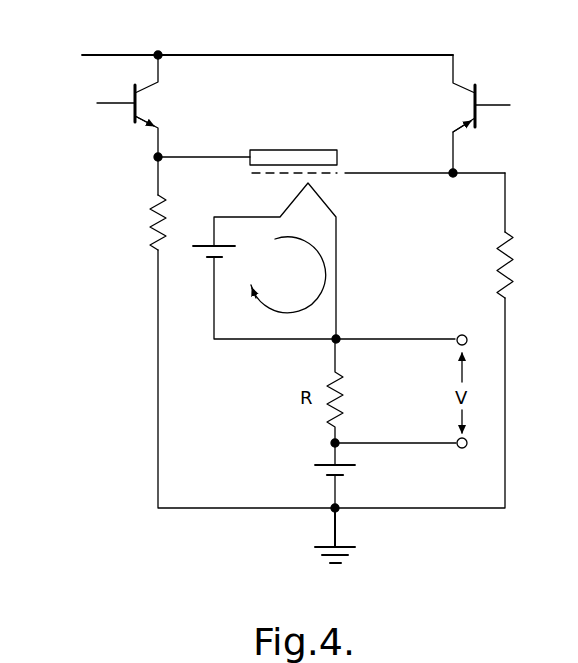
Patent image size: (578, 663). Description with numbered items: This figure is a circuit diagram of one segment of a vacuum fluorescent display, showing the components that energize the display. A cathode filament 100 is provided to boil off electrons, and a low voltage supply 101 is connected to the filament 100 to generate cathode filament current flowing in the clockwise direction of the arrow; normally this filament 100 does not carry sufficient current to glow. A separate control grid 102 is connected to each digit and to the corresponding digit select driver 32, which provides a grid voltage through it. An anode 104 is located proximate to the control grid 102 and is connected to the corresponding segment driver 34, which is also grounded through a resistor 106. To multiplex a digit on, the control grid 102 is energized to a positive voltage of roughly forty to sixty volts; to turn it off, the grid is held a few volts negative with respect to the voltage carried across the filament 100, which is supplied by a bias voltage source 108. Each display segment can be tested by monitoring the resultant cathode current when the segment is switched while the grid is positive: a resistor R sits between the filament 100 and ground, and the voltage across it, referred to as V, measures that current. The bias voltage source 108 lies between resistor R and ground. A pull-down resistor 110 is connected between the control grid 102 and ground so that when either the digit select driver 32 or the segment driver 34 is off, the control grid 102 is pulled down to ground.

The digit select driver 32 is at (477, 96).
The segment driver 34 is at (120, 104).
The cathode filament 100 is at (325, 195).
The low voltage supply 101 is at (210, 258).
The control grid 102 is at (355, 172).
The anode 104 is at (290, 150).
The resistor 106 is at (152, 243).
The bias voltage source 108 is at (347, 466).
The pull-down resistor 110 is at (497, 279).